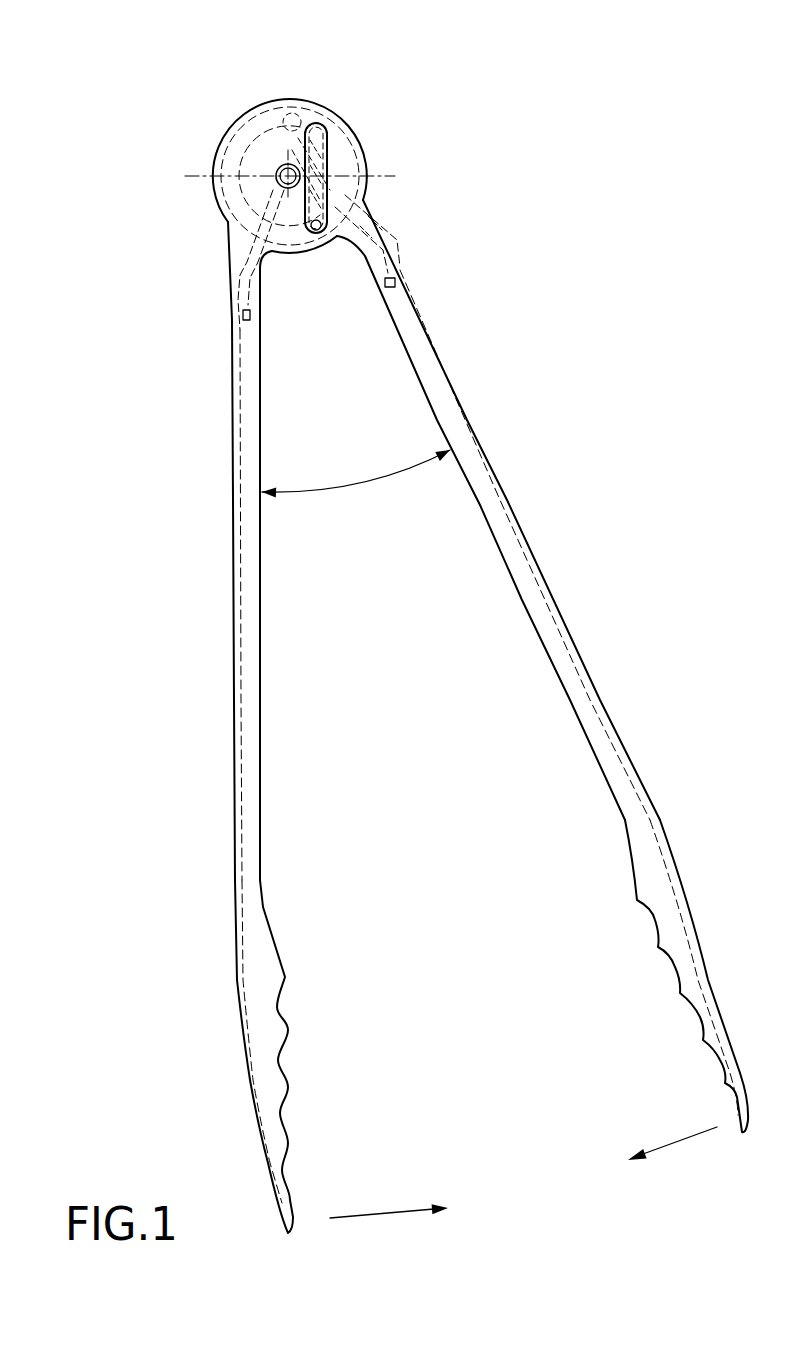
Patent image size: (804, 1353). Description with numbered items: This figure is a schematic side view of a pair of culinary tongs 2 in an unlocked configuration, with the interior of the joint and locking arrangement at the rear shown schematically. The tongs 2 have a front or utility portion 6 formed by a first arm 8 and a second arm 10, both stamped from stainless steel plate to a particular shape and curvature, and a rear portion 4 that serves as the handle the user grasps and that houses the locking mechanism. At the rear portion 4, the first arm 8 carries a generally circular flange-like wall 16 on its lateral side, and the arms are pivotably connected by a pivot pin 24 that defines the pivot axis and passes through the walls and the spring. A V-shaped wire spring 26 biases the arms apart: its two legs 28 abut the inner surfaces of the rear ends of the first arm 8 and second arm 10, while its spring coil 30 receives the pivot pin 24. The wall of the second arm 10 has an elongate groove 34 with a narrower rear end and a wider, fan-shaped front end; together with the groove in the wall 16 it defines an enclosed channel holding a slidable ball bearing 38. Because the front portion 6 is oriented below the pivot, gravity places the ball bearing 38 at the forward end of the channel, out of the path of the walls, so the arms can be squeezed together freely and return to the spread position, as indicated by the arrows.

The culinary tongs 2 is at (625, 73).
The rear portion 4 is at (510, 92).
The front portion 6 is at (647, 993).
The first arm 8 is at (252, 772).
The second arm 10 is at (542, 613).
The wall 16 is at (272, 137).
The pivot pin 24 is at (272, 182).
The wire spring 26 is at (355, 230).
The legs 28 is at (243, 311).
The spring coil 30 is at (278, 165).
The groove 34 is at (303, 130).
The ball bearing 38 is at (318, 231).